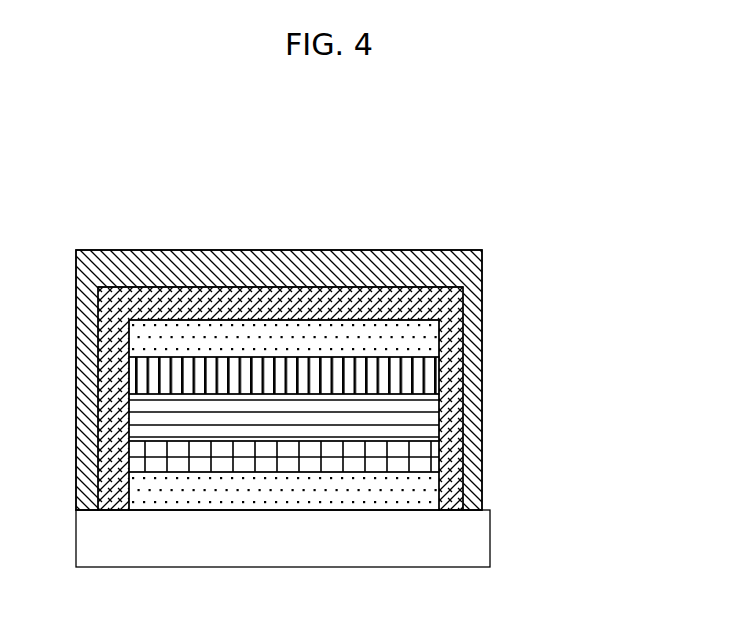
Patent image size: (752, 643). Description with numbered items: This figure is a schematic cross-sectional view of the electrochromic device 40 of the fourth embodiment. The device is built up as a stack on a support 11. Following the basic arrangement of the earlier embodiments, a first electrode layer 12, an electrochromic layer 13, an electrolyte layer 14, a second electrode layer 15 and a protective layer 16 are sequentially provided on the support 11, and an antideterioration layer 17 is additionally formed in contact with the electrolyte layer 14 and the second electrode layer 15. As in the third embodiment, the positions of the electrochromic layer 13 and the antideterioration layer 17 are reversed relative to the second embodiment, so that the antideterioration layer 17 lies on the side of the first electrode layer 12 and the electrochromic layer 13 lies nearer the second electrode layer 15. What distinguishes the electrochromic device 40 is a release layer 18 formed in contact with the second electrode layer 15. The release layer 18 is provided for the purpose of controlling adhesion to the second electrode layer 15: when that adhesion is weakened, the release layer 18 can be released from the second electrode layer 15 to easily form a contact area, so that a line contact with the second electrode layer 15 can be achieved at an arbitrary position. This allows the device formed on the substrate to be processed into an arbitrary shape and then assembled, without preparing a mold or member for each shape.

The electrochromic device 40 is at (287, 239).
The support 11 is at (480, 542).
The first electrode layer 12 is at (430, 492).
The electrochromic layer 13 is at (438, 378).
The electrolyte layer 14 is at (438, 417).
The second electrode layer 15 is at (436, 343).
The protective layer 16 is at (419, 258).
The antideterioration layer 17 is at (438, 462).
The release layer 18 is at (458, 275).